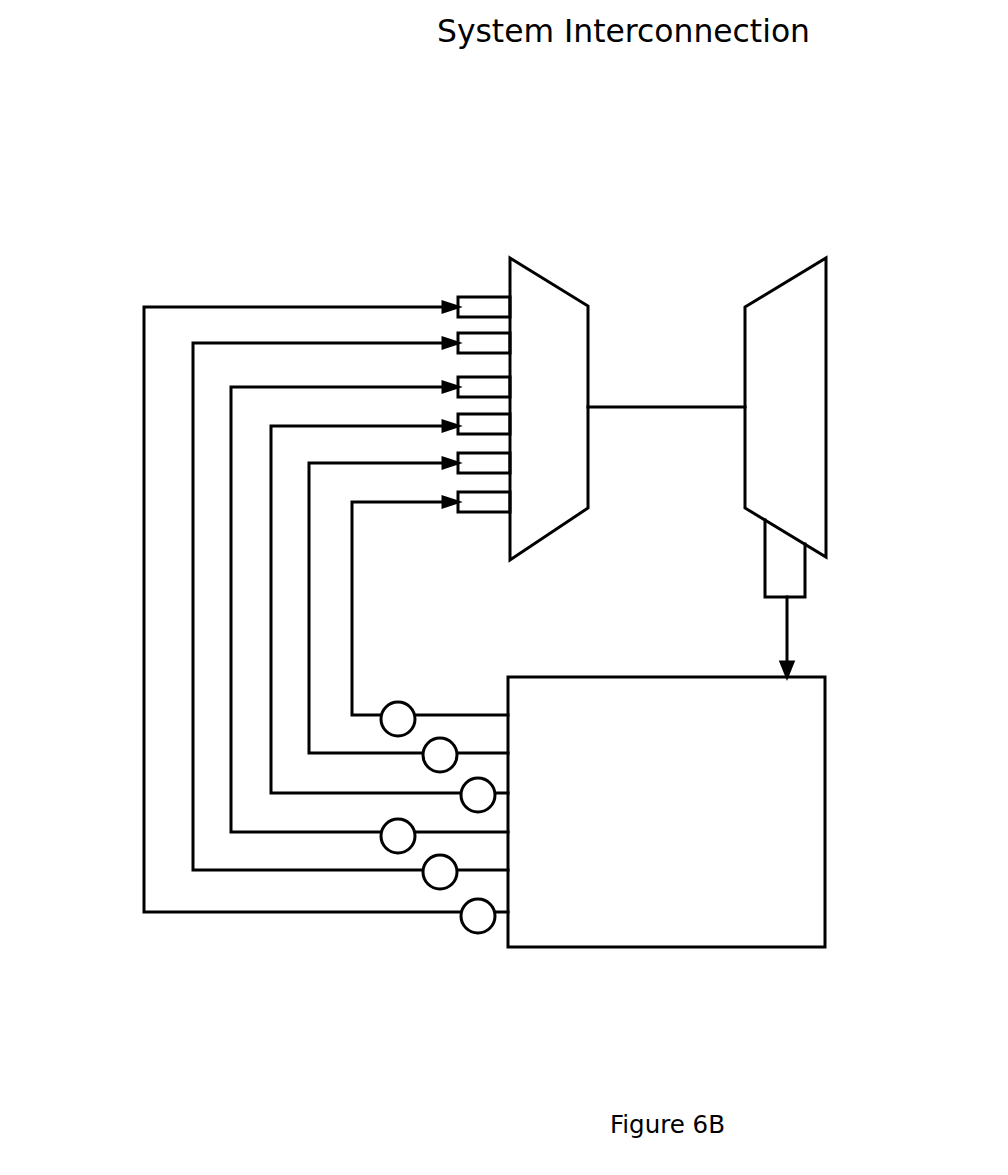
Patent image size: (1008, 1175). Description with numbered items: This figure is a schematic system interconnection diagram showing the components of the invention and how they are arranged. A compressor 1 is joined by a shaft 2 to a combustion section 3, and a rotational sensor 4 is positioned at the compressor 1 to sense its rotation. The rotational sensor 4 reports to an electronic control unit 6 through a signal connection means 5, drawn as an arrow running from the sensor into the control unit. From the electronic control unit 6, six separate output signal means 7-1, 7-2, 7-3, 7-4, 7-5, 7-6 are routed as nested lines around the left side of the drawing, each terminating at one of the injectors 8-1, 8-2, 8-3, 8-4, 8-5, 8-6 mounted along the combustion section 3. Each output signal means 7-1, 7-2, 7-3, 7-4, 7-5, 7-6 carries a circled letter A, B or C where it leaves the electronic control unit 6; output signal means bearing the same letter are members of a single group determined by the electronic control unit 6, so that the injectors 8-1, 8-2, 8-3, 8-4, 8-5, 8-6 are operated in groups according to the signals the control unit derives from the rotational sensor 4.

The compressor 1 is at (793, 397).
The shaft 2 is at (645, 407).
The combustion section 3 is at (562, 367).
The rotational sensor 4 is at (800, 582).
The signal connection means 5 is at (788, 640).
The electronic control unit 6 is at (802, 790).
The output signal means 7-1 is at (343, 553).
The output signal means 7-2 is at (300, 572).
The output signal means 7-3 is at (262, 612).
The output signal means 7-4 is at (225, 676).
The output signal means 7-5 is at (187, 723).
The output signal means 7-6 is at (140, 793).
The injector 8-1 is at (470, 505).
The injector 8-2 is at (472, 467).
The injector 8-3 is at (470, 425).
The injector 8-4 is at (470, 388).
The injector 8-5 is at (467, 343).
The injector 8-6 is at (493, 305).